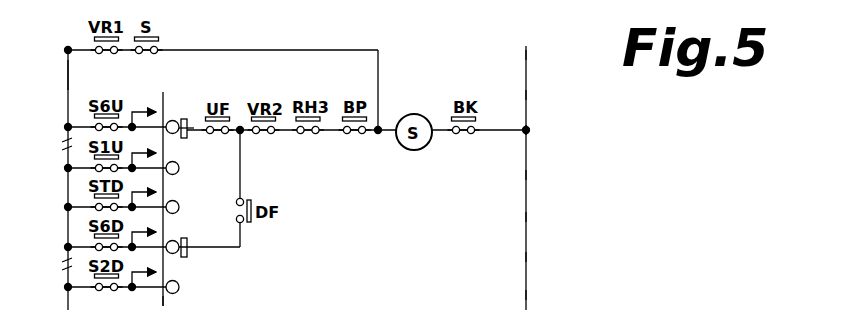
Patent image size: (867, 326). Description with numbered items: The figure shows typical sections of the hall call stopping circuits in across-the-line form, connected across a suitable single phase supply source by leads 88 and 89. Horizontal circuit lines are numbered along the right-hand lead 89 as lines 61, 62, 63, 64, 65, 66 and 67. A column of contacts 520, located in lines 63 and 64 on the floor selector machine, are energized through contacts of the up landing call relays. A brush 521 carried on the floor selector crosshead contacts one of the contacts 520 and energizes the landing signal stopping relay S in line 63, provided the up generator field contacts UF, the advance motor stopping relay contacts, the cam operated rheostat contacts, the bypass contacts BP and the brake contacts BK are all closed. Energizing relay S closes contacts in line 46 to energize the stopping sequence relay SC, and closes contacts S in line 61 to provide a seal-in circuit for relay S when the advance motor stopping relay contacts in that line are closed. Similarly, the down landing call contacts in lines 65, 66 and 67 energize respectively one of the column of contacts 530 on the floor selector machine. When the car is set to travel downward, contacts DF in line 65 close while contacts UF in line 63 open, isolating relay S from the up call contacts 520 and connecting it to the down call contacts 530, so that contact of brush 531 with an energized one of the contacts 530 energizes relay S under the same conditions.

The lead 88 is at (69, 86).
The lead 89 is at (524, 94).
The column of contacts 520 is at (163, 92).
The brush 521 is at (186, 138).
The column of contacts 530 is at (163, 306).
The brush 531 is at (186, 257).
The line 61 is at (542, 59).
The line 62 is at (542, 97).
The line 63 is at (555, 135).
The line 64 is at (542, 174).
The line 65 is at (542, 217).
The line 66 is at (542, 257).
The line 67 is at (542, 294).
The line 46 is at (597, 135).